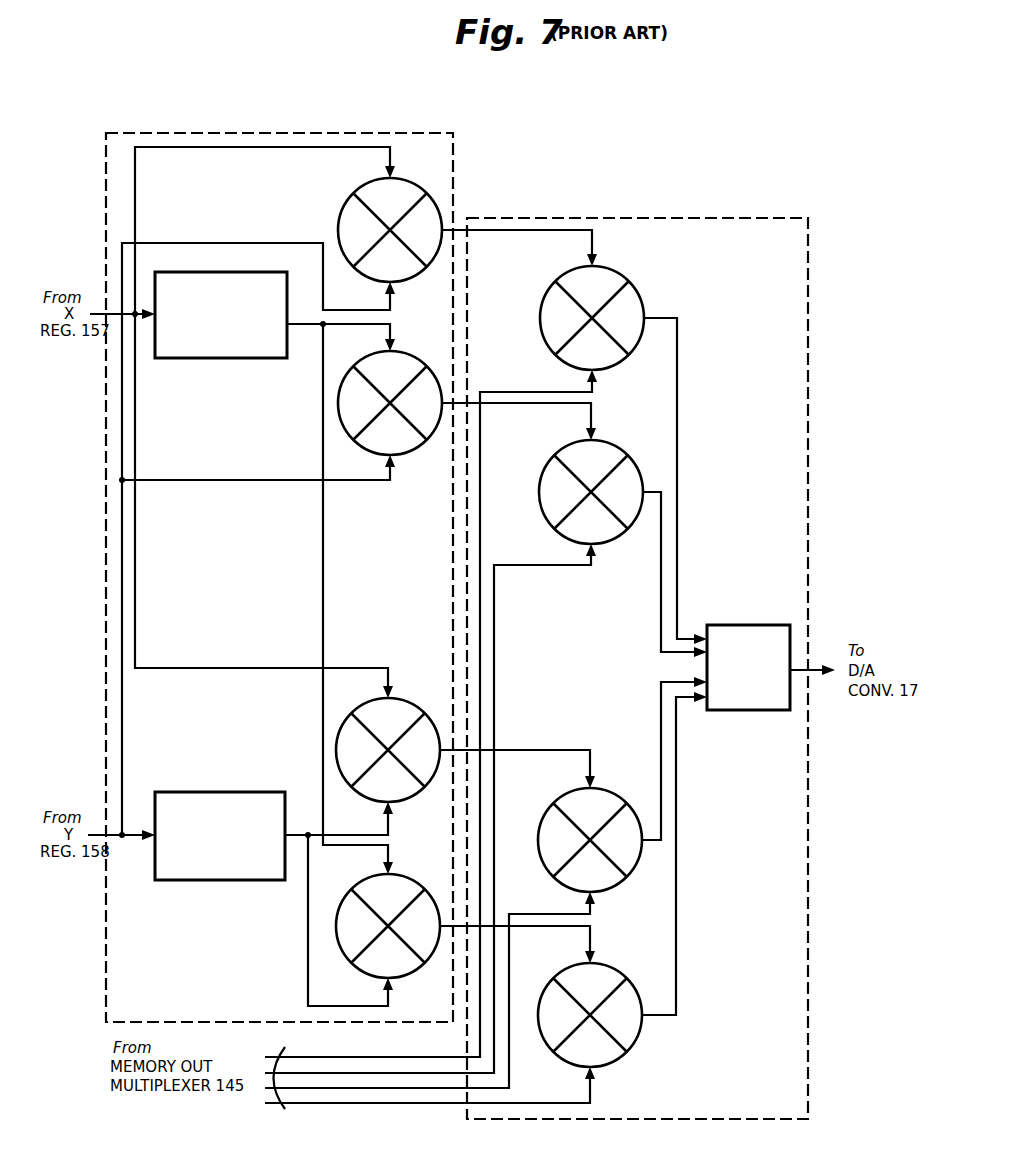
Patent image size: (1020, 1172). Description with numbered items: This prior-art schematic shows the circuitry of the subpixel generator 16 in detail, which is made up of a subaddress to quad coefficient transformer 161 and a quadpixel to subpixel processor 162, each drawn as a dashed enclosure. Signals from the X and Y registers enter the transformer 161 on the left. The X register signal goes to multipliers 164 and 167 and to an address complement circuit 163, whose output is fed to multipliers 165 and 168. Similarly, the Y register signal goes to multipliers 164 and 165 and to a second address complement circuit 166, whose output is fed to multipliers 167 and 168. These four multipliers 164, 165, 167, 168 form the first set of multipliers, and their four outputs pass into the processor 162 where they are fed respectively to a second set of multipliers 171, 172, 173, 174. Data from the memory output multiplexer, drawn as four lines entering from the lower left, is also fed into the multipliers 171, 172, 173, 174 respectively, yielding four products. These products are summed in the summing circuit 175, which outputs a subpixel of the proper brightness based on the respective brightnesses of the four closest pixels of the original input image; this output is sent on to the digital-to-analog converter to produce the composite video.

The subpixel generator 16 is at (520, 136).
The subaddress to quad coefficient transformer 161 is at (395, 136).
The quadpixel to subpixel processor 162 is at (745, 218).
The address complement circuit 163 is at (246, 276).
The multiplier 164 is at (357, 188).
The multiplier 165 is at (405, 354).
The address complement circuit 166 is at (239, 793).
The multiplier 167 is at (403, 700).
The multiplier 168 is at (403, 875).
The multiplier 171 is at (617, 272).
The multiplier 172 is at (614, 447).
The multiplier 173 is at (613, 790).
The multiplier 174 is at (613, 965).
The summing circuit 175 is at (750, 625).